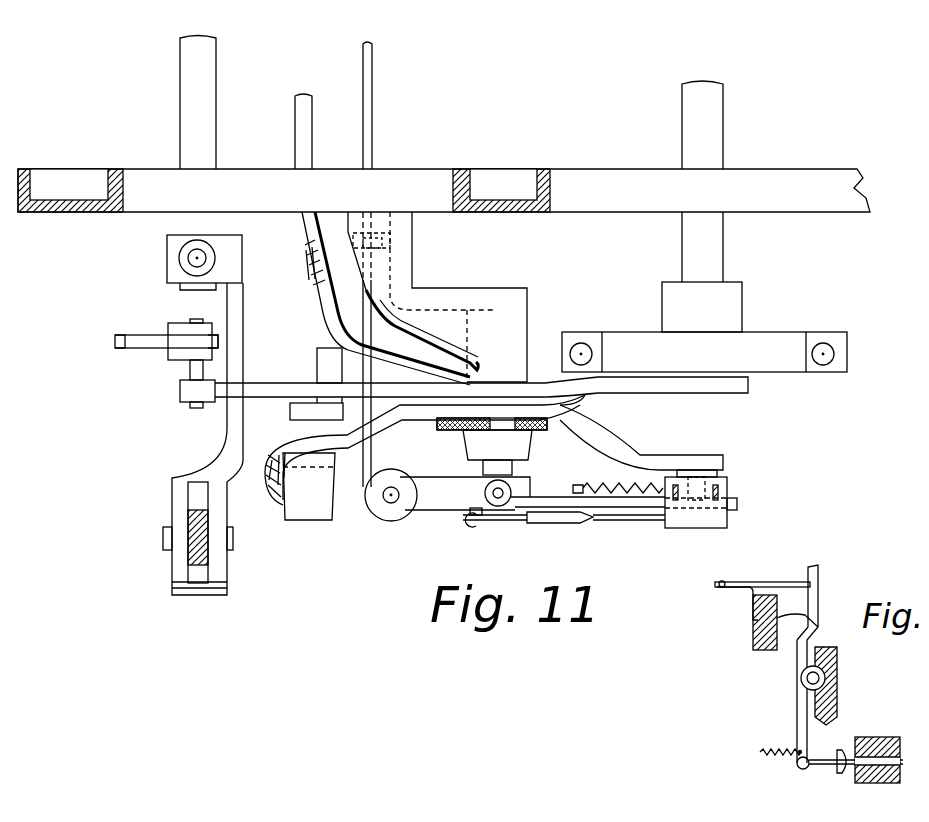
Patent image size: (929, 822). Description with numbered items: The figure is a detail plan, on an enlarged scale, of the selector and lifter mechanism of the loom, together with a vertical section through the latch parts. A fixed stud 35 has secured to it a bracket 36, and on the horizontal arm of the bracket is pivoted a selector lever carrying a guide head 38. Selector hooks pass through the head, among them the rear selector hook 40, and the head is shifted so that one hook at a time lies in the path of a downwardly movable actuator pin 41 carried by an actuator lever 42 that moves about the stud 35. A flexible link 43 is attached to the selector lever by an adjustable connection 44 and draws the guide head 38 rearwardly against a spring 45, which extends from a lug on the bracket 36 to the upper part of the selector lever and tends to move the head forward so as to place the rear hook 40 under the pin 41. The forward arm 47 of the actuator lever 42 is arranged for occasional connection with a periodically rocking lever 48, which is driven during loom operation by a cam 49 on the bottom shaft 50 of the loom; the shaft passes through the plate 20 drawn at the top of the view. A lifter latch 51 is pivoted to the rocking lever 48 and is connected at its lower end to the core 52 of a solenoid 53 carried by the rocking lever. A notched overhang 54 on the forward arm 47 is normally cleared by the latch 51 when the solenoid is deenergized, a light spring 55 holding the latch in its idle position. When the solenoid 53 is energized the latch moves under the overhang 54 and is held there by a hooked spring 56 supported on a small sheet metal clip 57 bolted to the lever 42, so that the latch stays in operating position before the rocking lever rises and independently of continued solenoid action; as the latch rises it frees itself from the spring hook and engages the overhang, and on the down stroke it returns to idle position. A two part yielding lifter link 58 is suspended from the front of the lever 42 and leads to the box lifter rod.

In FIG. 11, the base plate 20 is at (800, 178).
In FIG. 11, the bottom shaft 50 is at (712, 258).
In FIG. 11, the cam 49 is at (783, 340).
In FIG. 11, the rocking lever 48 is at (715, 382).
In FIG. 13, the rocking lever 48 is at (835, 690).
In FIG. 11, the forward arm 47 is at (274, 392).
In FIG. 13, the forward arm 47 is at (760, 635).
In FIG. 11, the actuator lever 42 is at (602, 452).
In FIG. 11, the actuator pin 41 is at (725, 475).
In FIG. 11, the guide head 38 is at (722, 487).
In FIG. 11, the rear selector hook 40 is at (735, 491).
In FIG. 11, the bracket 36 is at (433, 486).
In FIG. 11, the fixed stud 35 is at (508, 468).
In FIG. 11, the spring 45 is at (590, 486).
In FIG. 11, the flexible link 43 is at (446, 520).
In FIG. 11, the adjustable connection 44 is at (568, 525).
In FIG. 11, the yielding lifter link 58 is at (183, 322).
In FIG. 13, the hooked spring 56 is at (793, 582).
In FIG. 13, the notched overhang 54 is at (805, 617).
In FIG. 13, the sheet metal clip 57 is at (737, 592).
In FIG. 13, the lifter latch 51 is at (803, 655).
In FIG. 13, the solenoid 53 is at (890, 740).
In FIG. 13, the light spring 55 is at (770, 752).
In FIG. 13, the core 52 is at (838, 768).